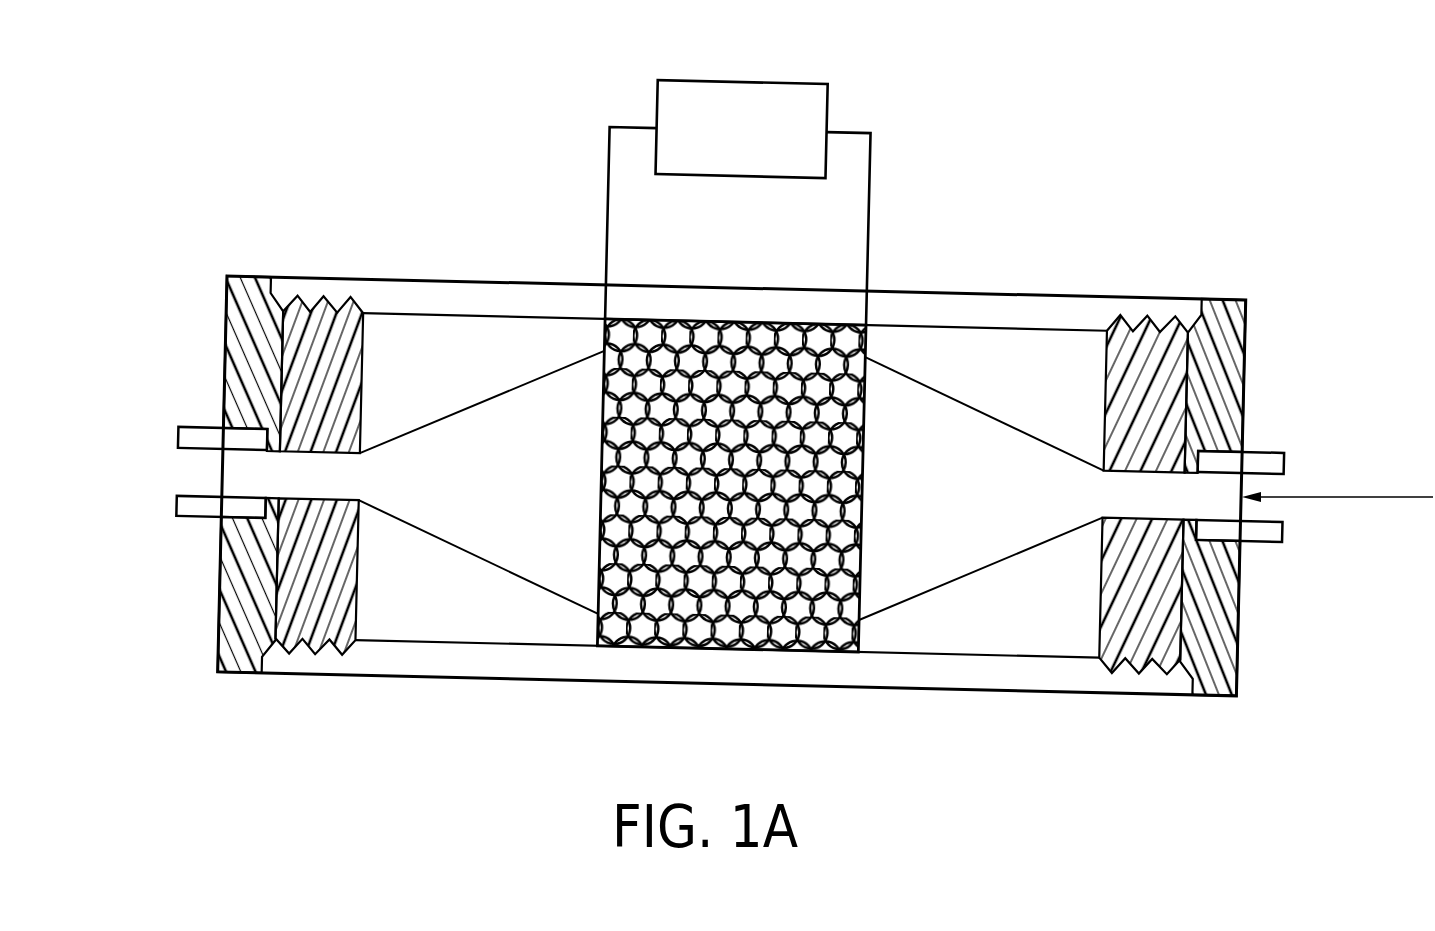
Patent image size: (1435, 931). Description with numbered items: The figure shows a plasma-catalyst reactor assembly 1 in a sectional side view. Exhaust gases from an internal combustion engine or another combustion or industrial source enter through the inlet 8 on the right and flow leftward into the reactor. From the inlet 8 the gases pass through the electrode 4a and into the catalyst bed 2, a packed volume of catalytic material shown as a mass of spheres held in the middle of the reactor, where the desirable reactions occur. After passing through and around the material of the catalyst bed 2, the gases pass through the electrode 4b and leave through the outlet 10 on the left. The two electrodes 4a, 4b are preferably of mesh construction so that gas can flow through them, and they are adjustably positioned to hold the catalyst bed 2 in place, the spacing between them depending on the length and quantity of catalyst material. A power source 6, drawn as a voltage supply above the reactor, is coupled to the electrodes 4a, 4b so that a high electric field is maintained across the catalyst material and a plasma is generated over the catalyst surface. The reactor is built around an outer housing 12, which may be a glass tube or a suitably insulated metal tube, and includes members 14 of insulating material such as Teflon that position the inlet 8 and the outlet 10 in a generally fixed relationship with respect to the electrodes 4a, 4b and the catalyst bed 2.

The reactor assembly 1 is at (777, 405).
The catalyst bed 2 is at (766, 337).
The electrode 4a is at (863, 560).
The electrode 4b is at (597, 557).
The power source 6 is at (740, 80).
The inlet 8 is at (1263, 509).
The outlet 10 is at (202, 472).
The outer housing 12 is at (476, 284).
The members 14 is at (417, 610).